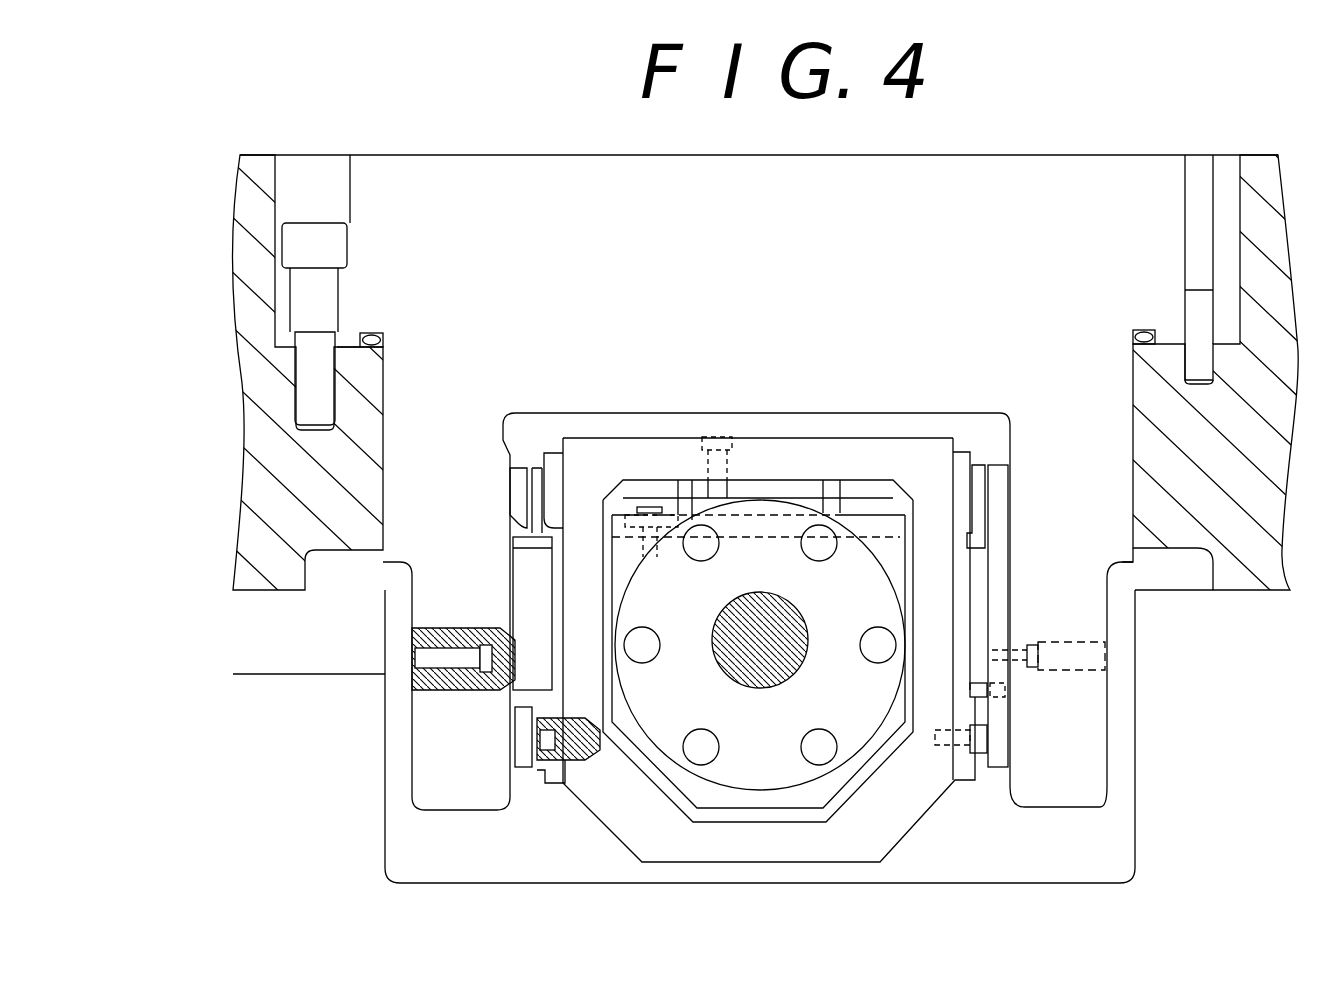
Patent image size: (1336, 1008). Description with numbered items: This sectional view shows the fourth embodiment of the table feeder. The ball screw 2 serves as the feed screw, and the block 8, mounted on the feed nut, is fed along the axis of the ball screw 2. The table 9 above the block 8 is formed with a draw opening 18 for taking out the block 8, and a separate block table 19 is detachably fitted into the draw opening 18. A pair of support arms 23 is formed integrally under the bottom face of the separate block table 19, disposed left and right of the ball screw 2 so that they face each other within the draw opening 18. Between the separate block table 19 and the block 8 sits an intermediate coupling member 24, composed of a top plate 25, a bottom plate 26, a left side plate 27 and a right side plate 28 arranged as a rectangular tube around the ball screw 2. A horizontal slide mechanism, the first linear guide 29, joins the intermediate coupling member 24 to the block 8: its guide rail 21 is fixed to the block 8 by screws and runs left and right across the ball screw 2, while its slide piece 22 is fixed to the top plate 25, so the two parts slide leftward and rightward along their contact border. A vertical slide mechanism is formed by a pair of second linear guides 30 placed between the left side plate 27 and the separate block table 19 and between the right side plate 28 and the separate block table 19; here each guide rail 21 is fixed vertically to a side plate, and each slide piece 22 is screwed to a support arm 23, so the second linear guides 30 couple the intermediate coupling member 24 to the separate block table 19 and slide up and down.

The ball screw 2 is at (760, 680).
The block 8 is at (832, 788).
The table 9 is at (1263, 192).
The draw opening 18 is at (398, 461).
The separate block table 19 is at (583, 239).
The guide rail 21 is at (530, 498).
The slide piece 22 is at (527, 568).
The support arm 23 is at (452, 798).
The intermediate coupling member 24 is at (605, 815).
The top plate 25 is at (776, 476).
The bottom plate 26 is at (745, 861).
The left side plate 27 is at (564, 621).
The right side plate 28 is at (918, 621).
The first linear guide 29 is at (751, 468).
The second linear guide 30 is at (527, 452).